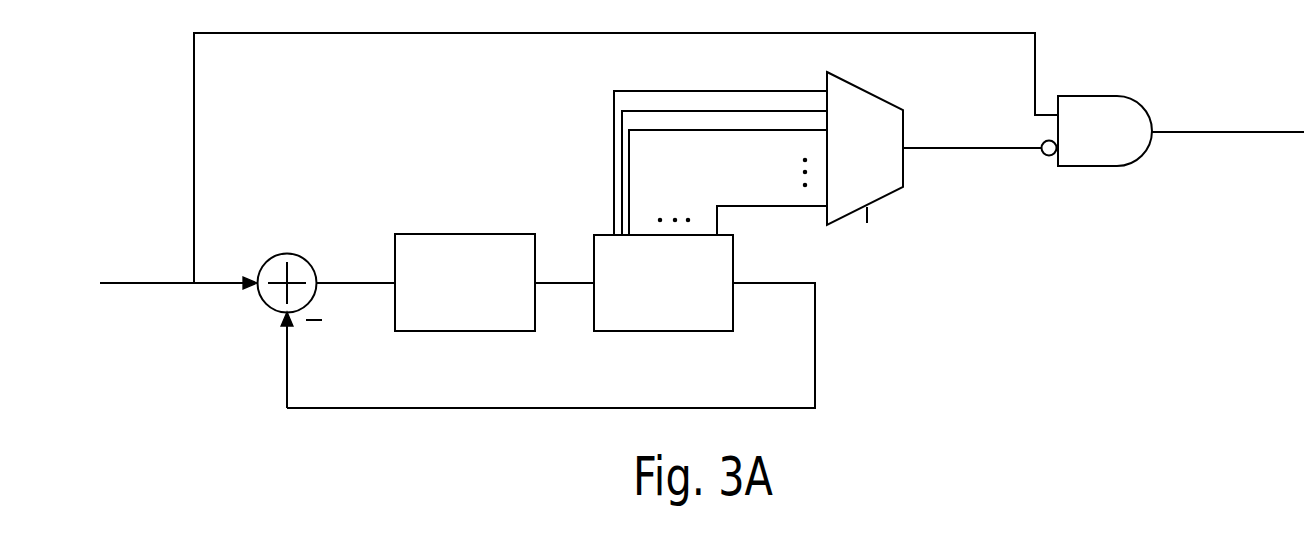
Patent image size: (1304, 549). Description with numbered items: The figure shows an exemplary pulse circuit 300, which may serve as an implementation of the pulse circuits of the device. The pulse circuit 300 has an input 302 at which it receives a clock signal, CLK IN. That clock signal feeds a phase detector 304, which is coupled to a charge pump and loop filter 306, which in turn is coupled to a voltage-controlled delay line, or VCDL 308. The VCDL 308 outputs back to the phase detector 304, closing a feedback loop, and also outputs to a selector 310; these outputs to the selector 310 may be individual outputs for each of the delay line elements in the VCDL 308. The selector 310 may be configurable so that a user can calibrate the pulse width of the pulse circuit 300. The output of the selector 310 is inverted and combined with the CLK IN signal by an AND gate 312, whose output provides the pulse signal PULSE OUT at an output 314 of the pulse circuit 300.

The pulse circuit 300 is at (86, 58).
The input 302 is at (113, 282).
The phase detector 304 is at (296, 253).
The charge pump and loop filter 306 is at (475, 234).
The voltage-controlled delay line (VCDL) 308 is at (653, 331).
The selector 310 is at (895, 102).
The AND gate 312 is at (1110, 96).
The output 314 is at (1215, 97).